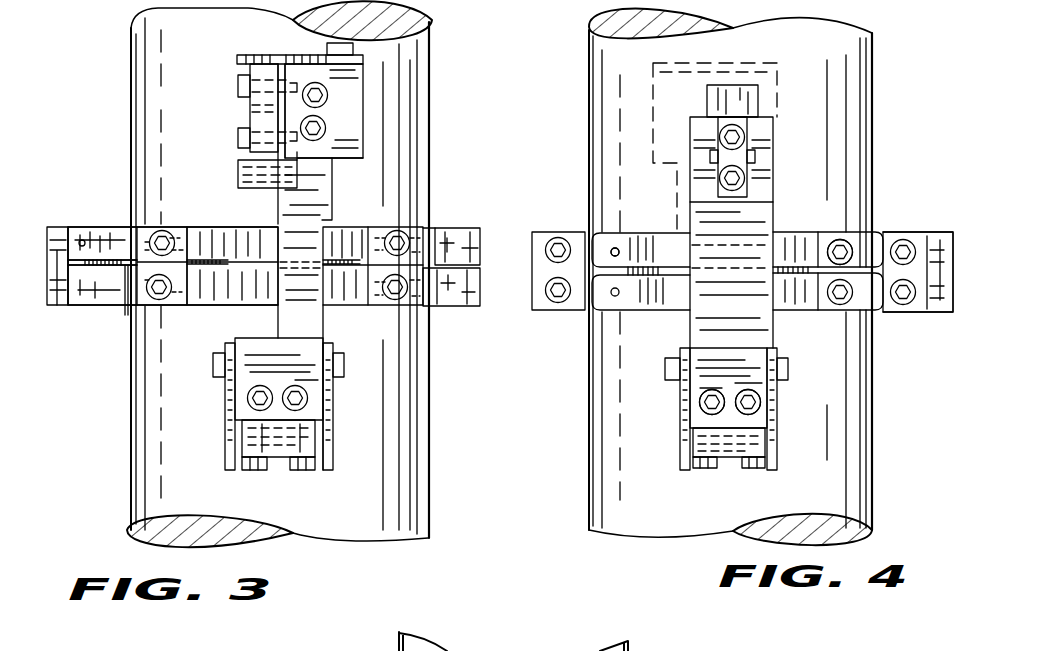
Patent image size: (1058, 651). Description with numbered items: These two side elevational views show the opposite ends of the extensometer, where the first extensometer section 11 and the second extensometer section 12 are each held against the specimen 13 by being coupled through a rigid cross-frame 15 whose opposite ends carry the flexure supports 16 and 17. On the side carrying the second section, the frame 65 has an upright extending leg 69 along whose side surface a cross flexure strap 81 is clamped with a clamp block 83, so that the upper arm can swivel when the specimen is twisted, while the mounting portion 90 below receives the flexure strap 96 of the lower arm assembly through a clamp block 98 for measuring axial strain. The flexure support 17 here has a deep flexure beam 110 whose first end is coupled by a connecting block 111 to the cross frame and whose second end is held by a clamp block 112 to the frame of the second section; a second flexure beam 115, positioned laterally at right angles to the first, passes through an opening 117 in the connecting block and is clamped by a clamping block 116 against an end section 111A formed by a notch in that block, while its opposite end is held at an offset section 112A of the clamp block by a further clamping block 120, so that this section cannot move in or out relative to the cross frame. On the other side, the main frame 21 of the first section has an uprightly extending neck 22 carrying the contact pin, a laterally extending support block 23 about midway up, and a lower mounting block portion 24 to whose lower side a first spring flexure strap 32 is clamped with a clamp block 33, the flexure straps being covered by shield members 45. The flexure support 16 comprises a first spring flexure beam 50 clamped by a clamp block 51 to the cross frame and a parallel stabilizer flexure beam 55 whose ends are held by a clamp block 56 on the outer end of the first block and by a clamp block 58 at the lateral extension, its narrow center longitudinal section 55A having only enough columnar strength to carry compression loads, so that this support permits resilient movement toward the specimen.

In FIG. 4, the first extensometer section 11 is at (674, 420).
In FIG. 3, the second extensometer section 12 is at (203, 386).
In FIG. 3, the specimen 13 is at (397, 507).
In FIG. 4, the specimen 13 is at (868, 500).
In FIG. 3, the rigid cross-frame 15 is at (62, 308).
In FIG. 4, the rigid cross-frame 15 is at (945, 245).
In FIG. 4, the flexure support 16 is at (686, 304).
In FIG. 3, the flexure support 17 is at (238, 316).
In FIG. 4, the main frame 21 is at (752, 335).
In FIG. 4, the neck 22 is at (758, 222).
In FIG. 4, the laterally extending support block 23 is at (605, 243).
In FIG. 4, the lower mounting block portion 24 is at (752, 377).
In FIG. 4, the first spring flexure strap 32 is at (748, 433).
In FIG. 4, the clamp block 33 is at (733, 460).
In FIG. 4, the shield members 45 is at (778, 422).
In FIG. 4, the first spring flexure beam 50 is at (650, 243).
In FIG. 4, the clamp block 51 is at (863, 246).
In FIG. 4, the stabilizer flexure beam 55 is at (862, 295).
In FIG. 4, the center longitudinal section 55A is at (630, 312).
In FIG. 4, the clamp block 56 is at (910, 233).
In FIG. 4, the clamp block 58 is at (558, 314).
In FIG. 3, the frame 65 is at (327, 330).
In FIG. 3, the upright extending leg 69 is at (315, 197).
In FIG. 3, the cross flexure strap 81 is at (285, 110).
In FIG. 3, the clamp block 83 is at (270, 112).
In FIG. 3, the mounting portion 90 is at (308, 400).
In FIG. 3, the flexure strap 96 is at (290, 428).
In FIG. 3, the clamp block 98 is at (277, 452).
In FIG. 3, the flexure beam 110 is at (207, 240).
In FIG. 3, the connecting block 111 is at (131, 240).
In FIG. 3, the end section 111A is at (82, 237).
In FIG. 3, the clamp block 112 is at (419, 243).
In FIG. 3, the offset section 112A is at (470, 308).
In FIG. 3, the second flexure beam 115 is at (232, 265).
In FIG. 3, the clamping block 116 is at (66, 308).
In FIG. 3, the opening 117 is at (88, 310).
In FIG. 3, the clamping block 120 is at (480, 247).